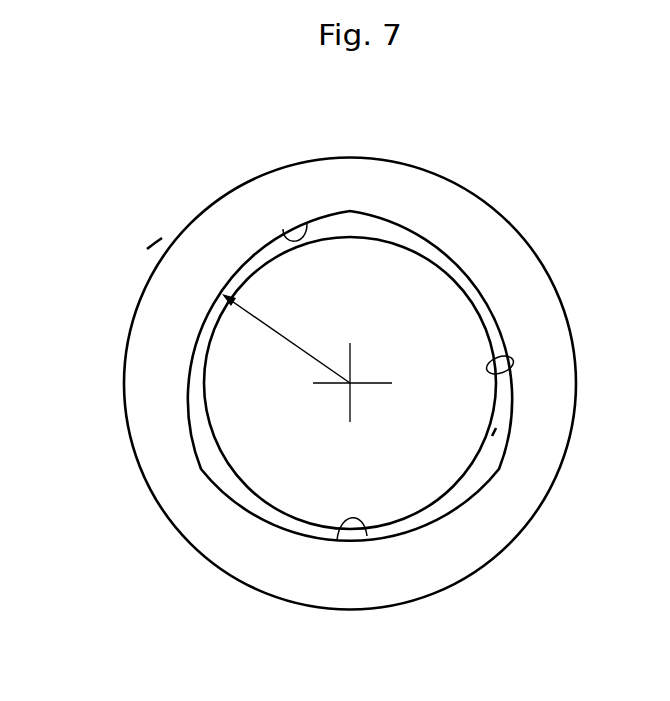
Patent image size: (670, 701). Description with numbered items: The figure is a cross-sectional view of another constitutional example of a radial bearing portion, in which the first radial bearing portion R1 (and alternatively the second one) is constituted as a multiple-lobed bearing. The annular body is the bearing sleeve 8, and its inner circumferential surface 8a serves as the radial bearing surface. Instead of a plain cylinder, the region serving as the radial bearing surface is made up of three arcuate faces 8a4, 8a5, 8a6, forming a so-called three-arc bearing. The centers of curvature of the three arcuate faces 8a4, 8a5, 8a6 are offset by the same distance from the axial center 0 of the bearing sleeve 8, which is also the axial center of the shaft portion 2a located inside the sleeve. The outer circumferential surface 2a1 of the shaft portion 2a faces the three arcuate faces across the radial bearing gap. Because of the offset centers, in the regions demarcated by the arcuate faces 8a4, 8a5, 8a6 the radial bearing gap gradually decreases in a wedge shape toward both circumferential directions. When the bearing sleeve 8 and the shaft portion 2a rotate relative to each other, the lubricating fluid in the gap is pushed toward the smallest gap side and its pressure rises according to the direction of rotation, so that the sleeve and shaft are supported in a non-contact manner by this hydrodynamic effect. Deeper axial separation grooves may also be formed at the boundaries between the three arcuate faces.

The bearing sleeve 8 is at (474, 202).
The inner circumferential surface 8a is at (200, 331).
The arcuate face 8a4 is at (512, 367).
The arcuate face 8a5 is at (283, 231).
The arcuate face 8a6 is at (363, 540).
The shaft portion 2a is at (492, 327).
The outer circumferential surface 2a1 is at (490, 433).
The axial center 0 is at (307, 364).
The first radial bearing portion R1 is at (150, 251).